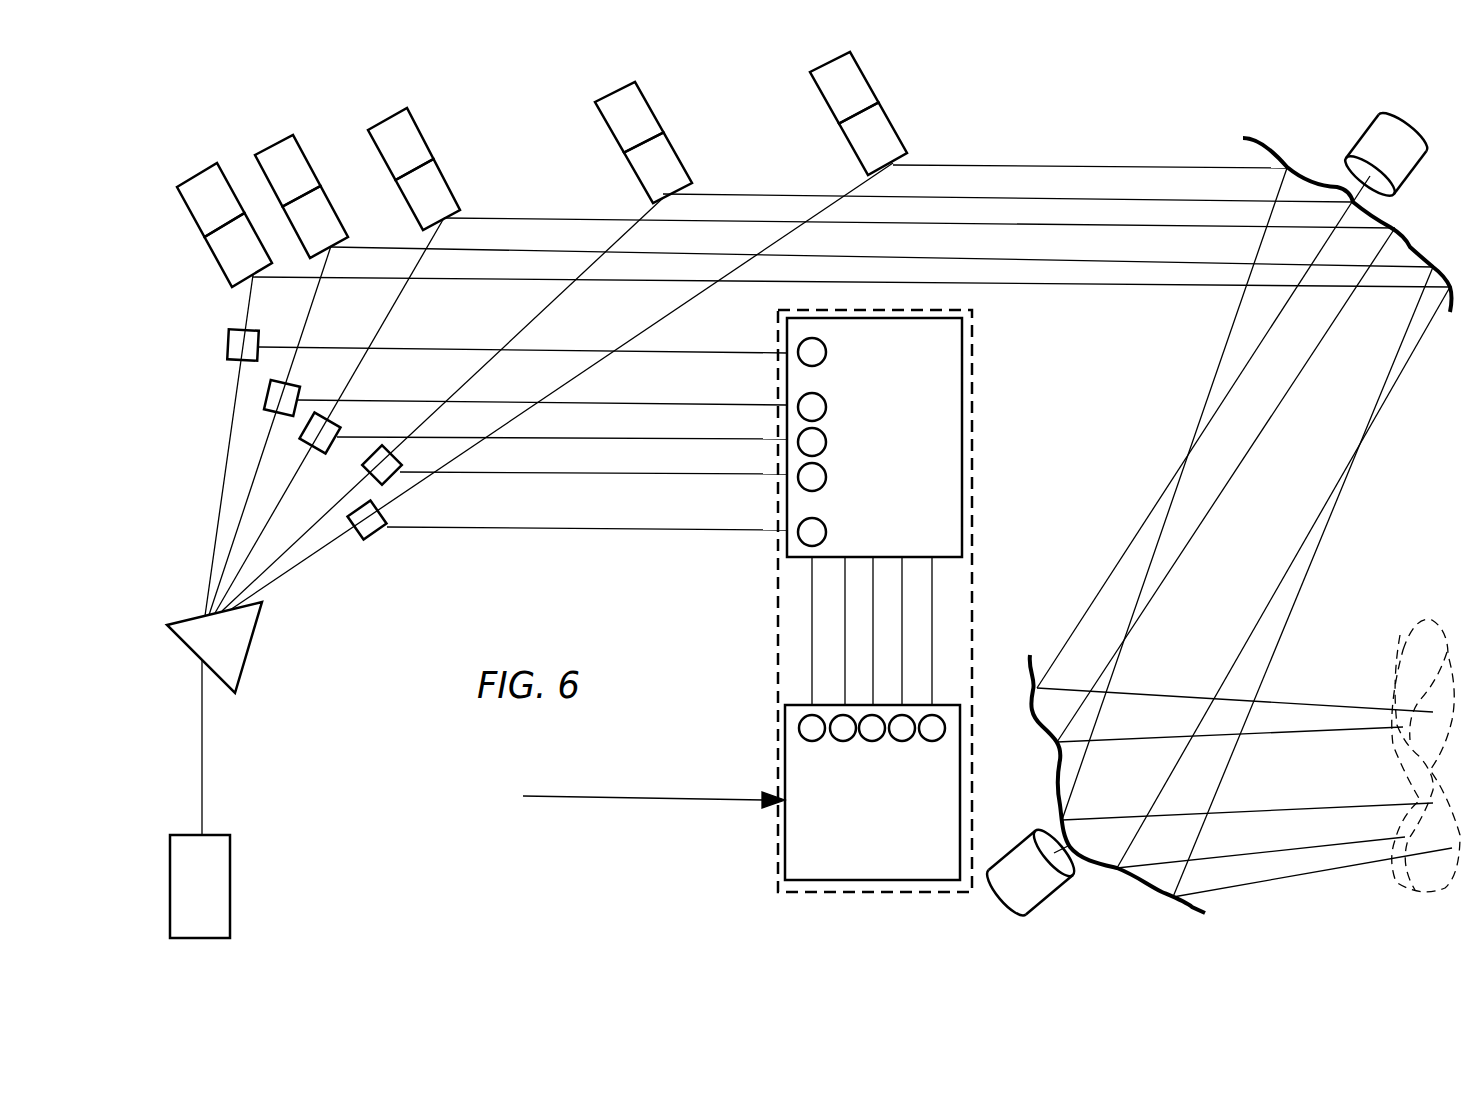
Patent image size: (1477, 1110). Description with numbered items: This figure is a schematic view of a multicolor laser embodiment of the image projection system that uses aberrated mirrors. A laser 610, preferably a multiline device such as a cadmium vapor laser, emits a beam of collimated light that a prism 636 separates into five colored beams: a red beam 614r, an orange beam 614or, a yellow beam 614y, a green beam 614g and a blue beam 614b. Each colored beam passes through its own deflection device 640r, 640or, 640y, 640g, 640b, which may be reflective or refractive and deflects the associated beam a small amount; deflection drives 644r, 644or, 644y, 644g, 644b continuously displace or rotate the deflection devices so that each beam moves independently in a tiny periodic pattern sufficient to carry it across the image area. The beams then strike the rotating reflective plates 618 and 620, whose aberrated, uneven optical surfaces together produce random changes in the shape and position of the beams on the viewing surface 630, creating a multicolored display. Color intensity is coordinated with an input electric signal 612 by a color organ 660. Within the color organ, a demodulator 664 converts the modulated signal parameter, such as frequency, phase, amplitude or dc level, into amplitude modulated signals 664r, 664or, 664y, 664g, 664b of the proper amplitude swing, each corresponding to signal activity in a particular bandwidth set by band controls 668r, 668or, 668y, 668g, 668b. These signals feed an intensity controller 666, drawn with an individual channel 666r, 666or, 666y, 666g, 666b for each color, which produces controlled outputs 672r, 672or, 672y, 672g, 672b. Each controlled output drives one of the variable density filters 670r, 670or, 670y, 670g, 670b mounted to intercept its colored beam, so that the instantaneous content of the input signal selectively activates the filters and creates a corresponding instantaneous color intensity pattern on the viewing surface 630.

The laser 610 is at (235, 867).
The audio input signal 612 is at (637, 794).
The red light beam 614r is at (230, 413).
The orange light beam 614or is at (248, 483).
The yellow light beam 614y is at (250, 543).
The green light beam 614g is at (318, 528).
The blue light beam 614b is at (285, 583).
The reflective plate 618 is at (1247, 135).
The reflective plate 620 is at (1130, 888).
The viewing surface 630 is at (1403, 640).
The prism 636 is at (247, 675).
The deflection device 640r is at (214, 258).
The deflection device 640or is at (352, 196).
The deflection device 640y is at (452, 193).
The deflection device 640g is at (692, 145).
The deflection device 640b is at (890, 119).
The deflection drive 644r is at (192, 177).
The deflection drive 644or is at (299, 145).
The deflection drive 644y is at (426, 143).
The deflection drive 644g is at (645, 97).
The deflection drive 644b is at (858, 62).
The color organ 660 is at (775, 574).
The demodulator 664 is at (777, 872).
The amplitude modulated signal 664r is at (939, 631).
The amplitude modulated signal 664or is at (909, 631).
The amplitude modulated signal 664y is at (880, 631).
The amplitude modulated signal 664g is at (852, 631).
The amplitude modulated signal 664b is at (819, 631).
The intensity controller 666 is at (962, 396).
The red intensity control 666r is at (827, 350).
The orange intensity control 666or is at (827, 405).
The yellow intensity control 666y is at (827, 440).
The green intensity control 666g is at (827, 475).
The blue intensity control 666b is at (827, 530).
The band control 668r is at (932, 741).
The band control 668or is at (902, 741).
The band control 668y is at (872, 741).
The band control 668g is at (843, 741).
The band control 668b is at (812, 741).
The variable density filter 670r is at (223, 350).
The variable density filter 670or is at (293, 386).
The variable density filter 670y is at (332, 422).
The variable density filter 670g is at (400, 461).
The variable density filter 670b is at (385, 535).
The controlled output 672r is at (523, 341).
The controlled output 672or is at (542, 394).
The controlled output 672y is at (562, 428).
The controlled output 672g is at (593, 463).
The controlled output 672b is at (587, 519).